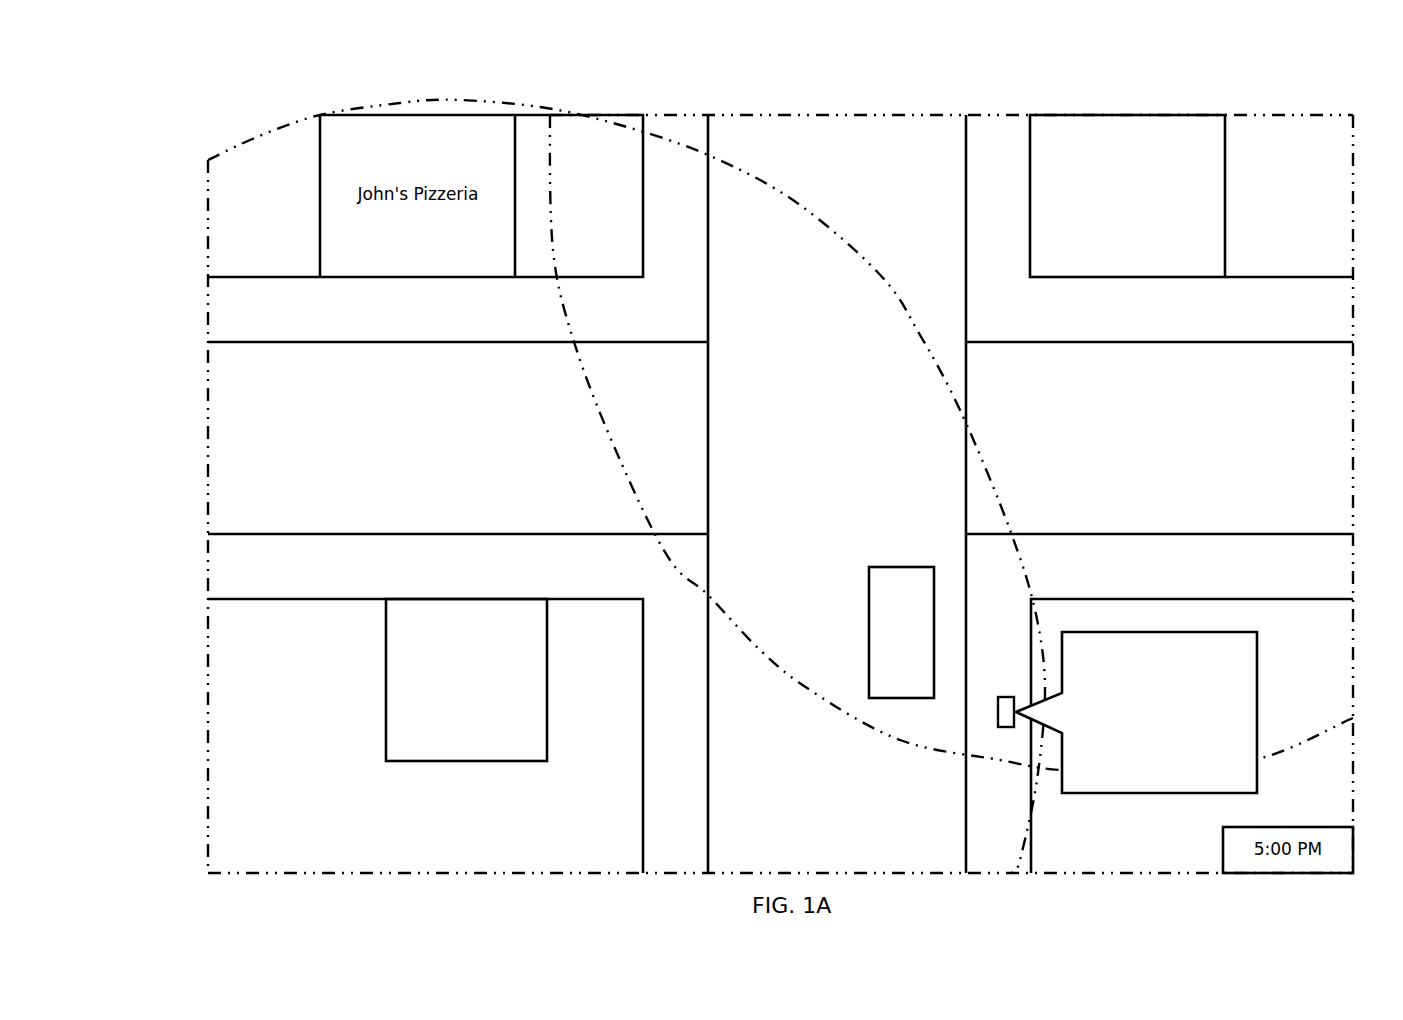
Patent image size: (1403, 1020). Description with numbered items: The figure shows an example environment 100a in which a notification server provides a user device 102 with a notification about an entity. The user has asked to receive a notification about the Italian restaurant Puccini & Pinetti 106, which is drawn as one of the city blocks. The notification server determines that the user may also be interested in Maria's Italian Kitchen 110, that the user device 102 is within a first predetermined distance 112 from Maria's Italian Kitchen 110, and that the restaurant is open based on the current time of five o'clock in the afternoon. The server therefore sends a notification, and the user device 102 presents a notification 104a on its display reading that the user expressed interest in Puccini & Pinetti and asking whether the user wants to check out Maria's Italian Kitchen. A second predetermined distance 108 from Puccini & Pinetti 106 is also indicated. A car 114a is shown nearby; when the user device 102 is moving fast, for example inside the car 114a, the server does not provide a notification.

The environment 100a is at (236, 131).
The user device 102 is at (1004, 729).
The notification 104a is at (1243, 786).
The Puccini & Pinetti 106 is at (530, 754).
The second predetermined distance 108 is at (786, 872).
The Maria's Italian Kitchen 110 is at (1208, 269).
The first predetermined distance 112 is at (878, 116).
The car 114a is at (918, 688).